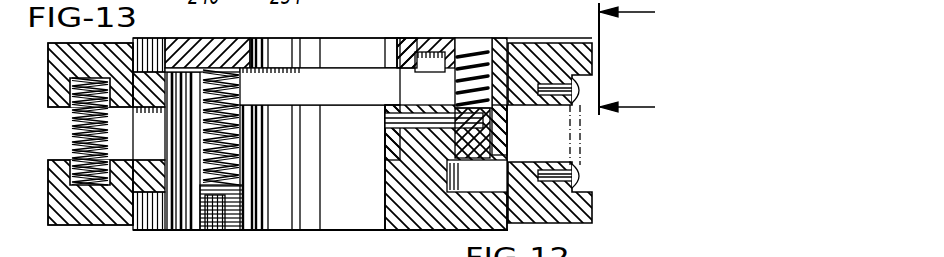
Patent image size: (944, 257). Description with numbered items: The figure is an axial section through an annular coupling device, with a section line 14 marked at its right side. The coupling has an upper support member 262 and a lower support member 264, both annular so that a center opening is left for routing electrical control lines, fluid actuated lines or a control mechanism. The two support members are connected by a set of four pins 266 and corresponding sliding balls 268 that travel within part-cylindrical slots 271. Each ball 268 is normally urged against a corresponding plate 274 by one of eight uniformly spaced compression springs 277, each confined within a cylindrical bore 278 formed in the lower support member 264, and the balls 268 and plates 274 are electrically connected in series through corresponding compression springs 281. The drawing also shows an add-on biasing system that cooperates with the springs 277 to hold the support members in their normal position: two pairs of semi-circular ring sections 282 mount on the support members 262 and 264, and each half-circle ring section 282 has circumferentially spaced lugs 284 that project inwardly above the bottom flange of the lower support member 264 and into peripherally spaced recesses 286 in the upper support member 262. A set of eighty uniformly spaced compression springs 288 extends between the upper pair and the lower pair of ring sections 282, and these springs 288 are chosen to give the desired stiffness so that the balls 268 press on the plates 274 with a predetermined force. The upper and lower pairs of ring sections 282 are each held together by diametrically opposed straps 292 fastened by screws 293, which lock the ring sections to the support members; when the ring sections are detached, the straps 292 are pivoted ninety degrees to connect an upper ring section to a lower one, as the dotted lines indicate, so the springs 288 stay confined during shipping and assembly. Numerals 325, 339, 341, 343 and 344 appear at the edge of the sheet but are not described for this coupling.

In FIG. 13, the section line 14- 14 is at (643, 61).
In FIG. 13, the upper support member 262 is at (456, 3).
In FIG. 13, the lower support member 264 is at (398, 215).
In FIG. 13, the pin 266 is at (400, 133).
In FIG. 13, the sliding ball 268 is at (468, 107).
In FIG. 13, the part-cylindrical slot 271 is at (492, 70).
In FIG. 13, the plate 274 is at (485, 152).
In FIG. 13, the compression spring 277 is at (233, 83).
In FIG. 13, the cylindrical bore 278 is at (207, 160).
In FIG. 13, the compression spring 281 is at (483, 56).
In FIG. 13, the semi-circular ring section 282 is at (57, 95).
In FIG. 13, the lug 284 is at (152, 92).
In FIG. 13, the recess 286 is at (202, 62).
In FIG. 13, the compression spring 288 is at (56, 190).
In FIG. 13, the strap 292 is at (584, 70).
In FIG. 13, the screw 293 is at (558, 97).
In FIG. 12, the element of FIG. 12 325 is at (750, 254).
In FIG. 12, the element of FIG. 12 339 is at (794, 242).
In FIG. 12, the element of FIG. 12 341 is at (836, 207).
In FIG. 12, the element of FIG. 12 343 is at (664, 242).
In FIG. 12, the element of FIG. 12 344 is at (716, 242).